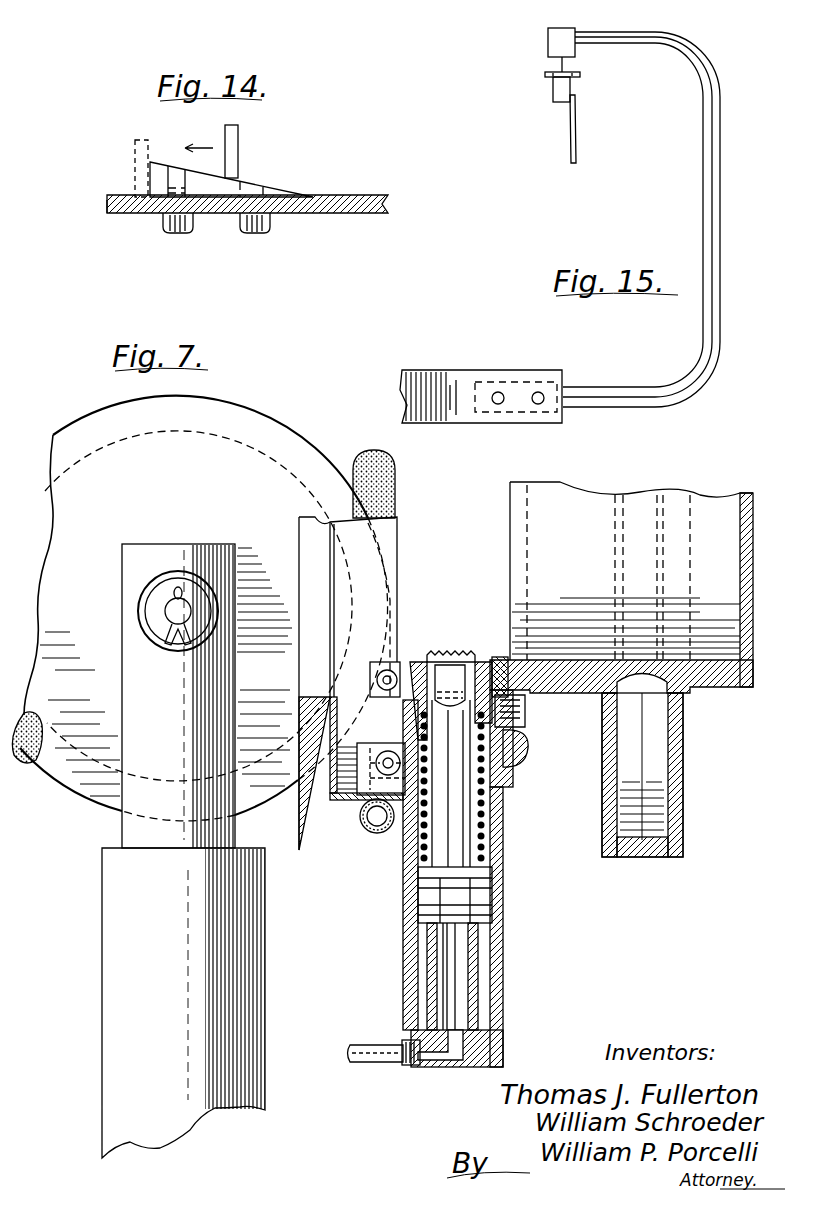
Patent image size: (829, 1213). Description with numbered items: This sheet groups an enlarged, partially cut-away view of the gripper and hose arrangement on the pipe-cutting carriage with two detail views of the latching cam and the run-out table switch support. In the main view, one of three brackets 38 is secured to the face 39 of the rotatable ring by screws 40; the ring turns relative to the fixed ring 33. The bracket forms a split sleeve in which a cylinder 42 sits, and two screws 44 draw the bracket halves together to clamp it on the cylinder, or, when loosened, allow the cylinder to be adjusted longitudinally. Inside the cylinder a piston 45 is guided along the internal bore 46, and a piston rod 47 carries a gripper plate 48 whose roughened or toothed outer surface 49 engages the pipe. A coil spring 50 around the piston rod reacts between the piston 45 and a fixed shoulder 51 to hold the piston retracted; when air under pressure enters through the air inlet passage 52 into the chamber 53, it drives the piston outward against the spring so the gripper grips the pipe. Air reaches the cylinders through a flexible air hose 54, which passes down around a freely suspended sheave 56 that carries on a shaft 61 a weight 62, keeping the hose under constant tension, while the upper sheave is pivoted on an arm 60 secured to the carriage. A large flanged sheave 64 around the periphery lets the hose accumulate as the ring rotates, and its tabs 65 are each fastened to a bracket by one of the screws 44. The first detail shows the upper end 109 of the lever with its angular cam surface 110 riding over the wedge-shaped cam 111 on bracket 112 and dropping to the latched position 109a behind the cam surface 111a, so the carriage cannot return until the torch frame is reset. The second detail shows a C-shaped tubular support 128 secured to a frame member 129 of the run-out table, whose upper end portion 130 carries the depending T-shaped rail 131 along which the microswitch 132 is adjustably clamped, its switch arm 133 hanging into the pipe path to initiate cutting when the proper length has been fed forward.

In FIG. 14, the upper end of lever 109 is at (238, 148).
In FIG. 14, the latched position of upper end 109a is at (135, 161).
In FIG. 14, the angular cam surface 110 is at (185, 148).
In FIG. 14, the wedge-shaped cam 111 is at (220, 233).
In FIG. 14, the surface of cam 111a is at (140, 190).
In FIG. 14, the bracket 112 is at (363, 191).
In FIG. 14, the arm 60 is at (107, 214).
In FIG. 15, the C-shaped tubular support 128 is at (715, 216).
In FIG. 15, the frame member 129 is at (455, 375).
In FIG. 15, the upper end portion 130 is at (548, 43).
In FIG. 15, the T-shaped rail 131 is at (580, 75).
In FIG. 15, the microswitch 132 is at (553, 90).
In FIG. 15, the switch arm 133 is at (578, 135).
In FIG. 7, the sheave 56 is at (288, 440).
In FIG. 7, the flexible air hose 54 is at (396, 494).
In FIG. 7, the shaft 61 is at (188, 607).
In FIG. 7, the weight 62 is at (105, 905).
In FIG. 7, the flanged sheave 64 is at (310, 807).
In FIG. 7, the tab 65 is at (342, 752).
In FIG. 7, the screw 44 is at (392, 669).
In FIG. 7, the toothed outer surface 49 is at (462, 655).
In FIG. 7, the gripper plate 48 is at (442, 665).
In FIG. 7, the bracket 38 is at (500, 657).
In FIG. 7, the face of rotatable ring 39 is at (587, 600).
In FIG. 7, the fixed ring 33 is at (683, 777).
In FIG. 7, the screw 40 is at (516, 768).
In FIG. 7, the cylinder 42 is at (497, 938).
In FIG. 7, the internal bore 46 is at (490, 987).
In FIG. 7, the piston rod 47 is at (452, 830).
In FIG. 7, the coil spring 50 is at (407, 853).
In FIG. 7, the fixed shoulder 51 is at (407, 730).
In FIG. 7, the piston 45 is at (492, 891).
In FIG. 7, the chamber 53 is at (440, 977).
In FIG. 7, the air inlet passage 52 is at (408, 1066).